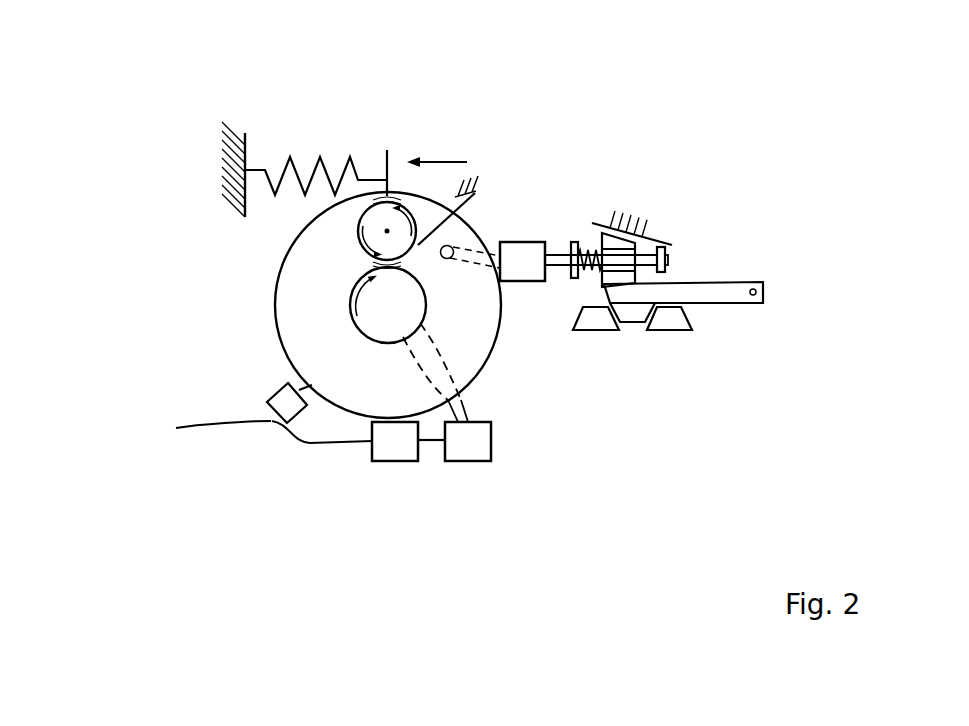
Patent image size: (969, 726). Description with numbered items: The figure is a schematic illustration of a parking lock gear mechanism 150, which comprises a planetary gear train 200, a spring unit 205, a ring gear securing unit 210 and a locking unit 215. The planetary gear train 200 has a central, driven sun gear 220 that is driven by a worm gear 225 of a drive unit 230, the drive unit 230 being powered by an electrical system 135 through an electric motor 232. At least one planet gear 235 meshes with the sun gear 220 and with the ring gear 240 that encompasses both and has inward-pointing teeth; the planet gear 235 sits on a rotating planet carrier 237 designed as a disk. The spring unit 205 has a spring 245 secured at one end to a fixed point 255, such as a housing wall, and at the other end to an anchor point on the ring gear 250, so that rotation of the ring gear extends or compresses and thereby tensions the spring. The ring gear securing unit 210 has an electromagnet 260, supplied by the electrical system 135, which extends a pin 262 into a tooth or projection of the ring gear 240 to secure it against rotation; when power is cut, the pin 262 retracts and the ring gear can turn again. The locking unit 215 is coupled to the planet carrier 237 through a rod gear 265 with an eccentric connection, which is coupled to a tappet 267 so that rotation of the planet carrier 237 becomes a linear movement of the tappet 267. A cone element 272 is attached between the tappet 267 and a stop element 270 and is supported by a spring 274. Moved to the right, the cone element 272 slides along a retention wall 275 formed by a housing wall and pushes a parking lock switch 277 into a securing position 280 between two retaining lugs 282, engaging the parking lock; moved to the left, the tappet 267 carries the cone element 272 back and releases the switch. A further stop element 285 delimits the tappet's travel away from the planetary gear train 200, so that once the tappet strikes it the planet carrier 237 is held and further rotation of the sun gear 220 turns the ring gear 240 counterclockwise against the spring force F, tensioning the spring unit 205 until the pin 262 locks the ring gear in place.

The electrical system 135 is at (228, 425).
The parking lock gear mechanism 150 is at (573, 242).
The planetary gear train 200 is at (252, 309).
The spring unit 205 is at (278, 210).
The ring gear securing unit 210 is at (248, 396).
The locking unit 215 is at (529, 214).
The sun gear 220 is at (423, 312).
The worm gear 225 is at (473, 452).
The drive unit 230 is at (432, 473).
The electric motor 232 is at (400, 452).
The planet gear 235 is at (357, 247).
The planet carrier 237 is at (307, 302).
The ring gear 240 is at (282, 340).
The spring 245 is at (325, 168).
The ring gear 250 is at (247, 168).
The fixed point 255 is at (389, 190).
The electromagnet 260 is at (287, 405).
The pin 262 is at (300, 382).
The rod gear 265 is at (489, 255).
The tappet 267 is at (557, 245).
The stop element 270 is at (608, 189).
The cone element 272 is at (668, 275).
The spring 274 is at (597, 270).
The retention wall 275 is at (672, 244).
The parking lock switch 277 is at (727, 292).
The securing position 280 is at (638, 350).
The retaining lugs 282 is at (600, 322).
The stop element 285 is at (667, 246).